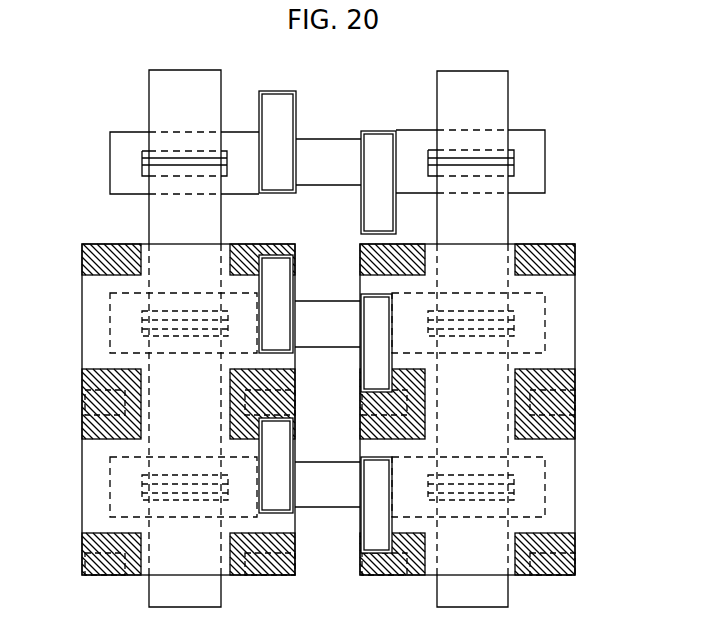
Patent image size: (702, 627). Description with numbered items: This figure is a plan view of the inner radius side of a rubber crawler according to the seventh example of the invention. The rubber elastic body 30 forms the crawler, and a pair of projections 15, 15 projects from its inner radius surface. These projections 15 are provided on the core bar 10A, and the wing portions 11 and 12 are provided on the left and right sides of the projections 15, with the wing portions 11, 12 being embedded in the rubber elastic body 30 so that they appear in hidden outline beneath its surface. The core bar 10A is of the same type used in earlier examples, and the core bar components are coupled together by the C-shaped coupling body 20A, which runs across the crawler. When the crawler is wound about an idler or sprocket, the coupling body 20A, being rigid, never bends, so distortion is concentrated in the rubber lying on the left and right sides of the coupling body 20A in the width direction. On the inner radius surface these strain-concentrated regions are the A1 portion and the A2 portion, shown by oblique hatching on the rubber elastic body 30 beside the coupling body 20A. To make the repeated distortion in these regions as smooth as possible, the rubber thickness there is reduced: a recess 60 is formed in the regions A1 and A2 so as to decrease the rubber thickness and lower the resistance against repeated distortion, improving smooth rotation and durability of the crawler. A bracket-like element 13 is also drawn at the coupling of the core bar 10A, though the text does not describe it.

The core bar 10A is at (318, 135).
The wing portion 11 is at (110, 155).
The wing portion 12 is at (540, 176).
The bracket member 13 is at (147, 152).
The projection 15 is at (274, 102).
The C-shaped coupling body 20A is at (175, 80).
The rubber elastic body 30 is at (568, 288).
The recess 60 is at (90, 403).
The A1 portion A1 is at (573, 248).
The A2 portion A2 is at (360, 432).